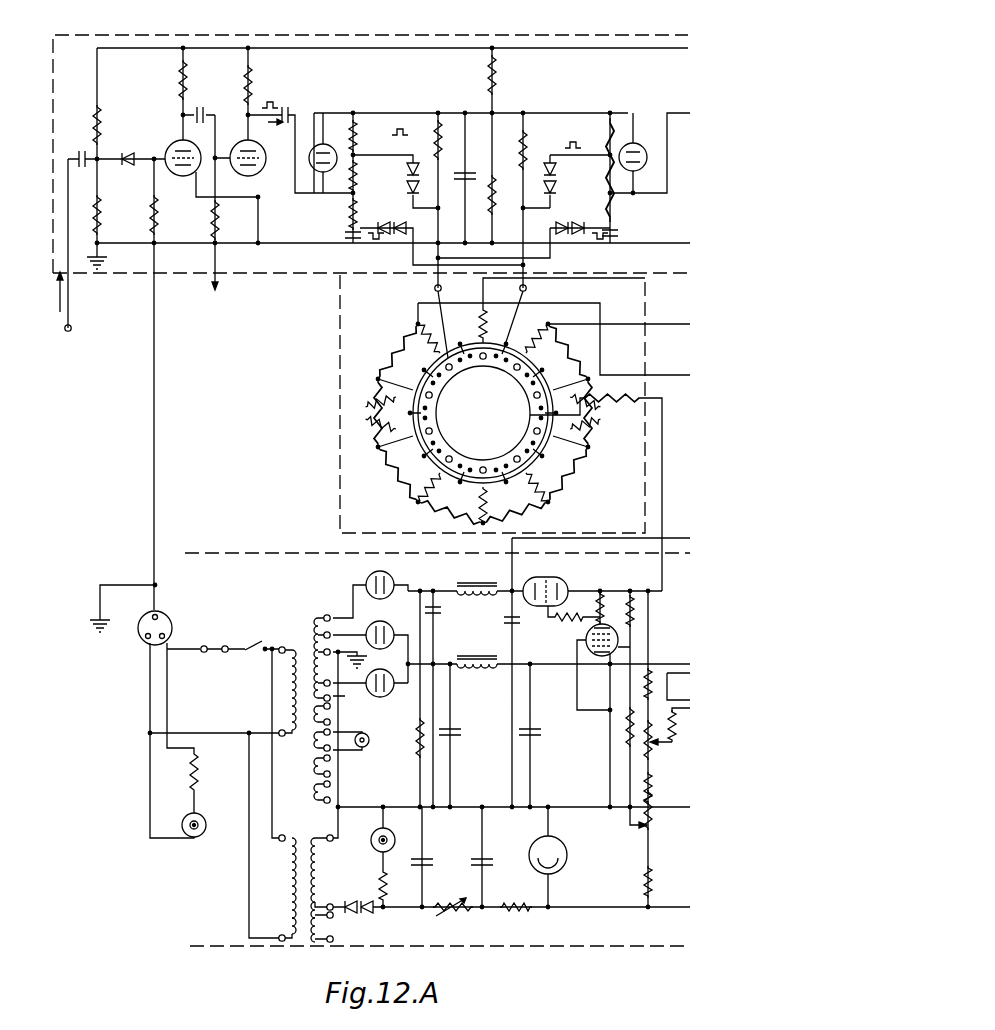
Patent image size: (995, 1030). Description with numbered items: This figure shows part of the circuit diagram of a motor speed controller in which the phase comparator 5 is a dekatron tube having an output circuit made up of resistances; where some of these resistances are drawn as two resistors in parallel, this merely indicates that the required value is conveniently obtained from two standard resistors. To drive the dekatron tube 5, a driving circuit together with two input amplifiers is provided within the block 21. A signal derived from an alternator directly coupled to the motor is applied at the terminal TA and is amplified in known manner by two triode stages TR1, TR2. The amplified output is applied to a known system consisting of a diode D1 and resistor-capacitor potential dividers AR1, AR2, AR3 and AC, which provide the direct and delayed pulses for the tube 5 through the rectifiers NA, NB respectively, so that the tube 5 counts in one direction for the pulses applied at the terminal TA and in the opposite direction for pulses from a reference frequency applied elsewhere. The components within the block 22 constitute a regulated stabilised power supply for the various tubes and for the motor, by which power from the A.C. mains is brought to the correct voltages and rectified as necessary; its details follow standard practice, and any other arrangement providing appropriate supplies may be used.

The block 21 is at (452, 35).
The phase comparator 5 is at (340, 392).
The block 22 is at (310, 946).
The triode stage TR1 is at (172, 150).
The triode stage TR2 is at (240, 138).
The diode D1 is at (323, 147).
The resistor-capacitor potential divider AR1 is at (369, 136).
The resistor-capacitor potential divider AR2 is at (369, 176).
The resistor-capacitor potential divider AR3 is at (369, 214).
The rectifier NA is at (419, 163).
The rectifier NB is at (402, 242).
The resistor-capacitor potential divider AC is at (337, 234).
The terminal TA is at (66, 340).